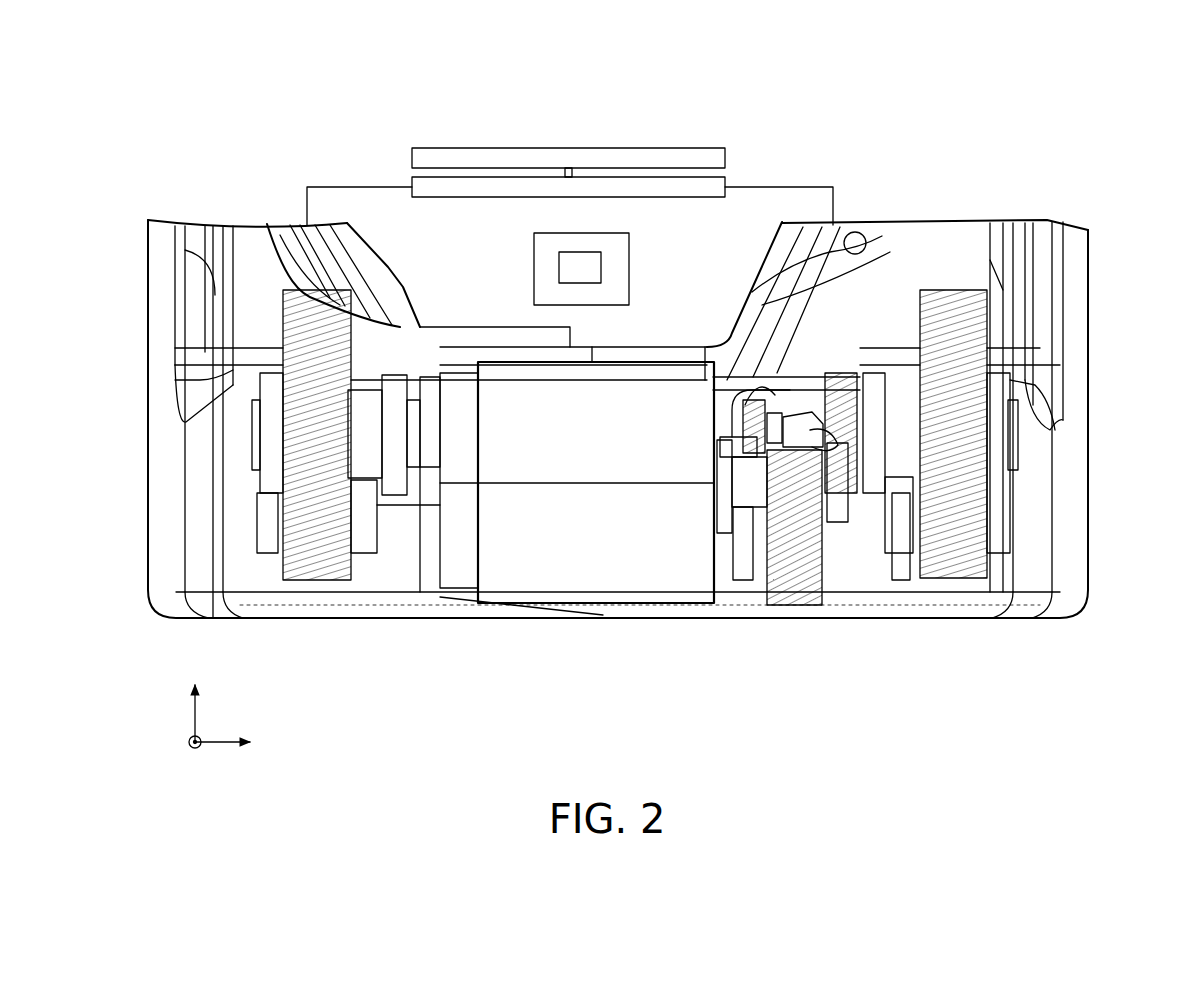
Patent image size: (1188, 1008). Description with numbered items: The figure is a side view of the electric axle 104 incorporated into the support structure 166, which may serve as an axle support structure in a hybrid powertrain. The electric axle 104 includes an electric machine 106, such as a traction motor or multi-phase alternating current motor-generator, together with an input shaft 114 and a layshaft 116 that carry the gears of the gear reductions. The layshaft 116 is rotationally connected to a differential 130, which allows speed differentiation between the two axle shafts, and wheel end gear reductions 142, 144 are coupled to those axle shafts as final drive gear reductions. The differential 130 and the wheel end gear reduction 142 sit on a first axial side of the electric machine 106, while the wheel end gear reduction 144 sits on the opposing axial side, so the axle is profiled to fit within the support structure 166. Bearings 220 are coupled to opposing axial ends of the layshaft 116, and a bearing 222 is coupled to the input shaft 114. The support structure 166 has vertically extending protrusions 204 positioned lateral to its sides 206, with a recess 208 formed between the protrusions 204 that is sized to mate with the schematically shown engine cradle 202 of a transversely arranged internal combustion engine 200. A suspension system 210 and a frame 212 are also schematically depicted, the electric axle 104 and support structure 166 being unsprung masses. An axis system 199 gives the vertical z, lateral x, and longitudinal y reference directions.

The electric axle 104 is at (438, 306).
The electric machine 106 is at (653, 604).
The input shaft 114 is at (750, 493).
The layshaft 116 is at (890, 553).
The differential 130 is at (797, 403).
The wheel end gear reduction 142 is at (904, 321).
The wheel end gear reduction 144 is at (271, 309).
The support structure 166 is at (968, 614).
The axis system 199 is at (236, 708).
The internal combustion engine 200 is at (603, 262).
The engine cradle 202 is at (534, 258).
The vertically extending protrusions 204 is at (345, 233).
The sides 206 is at (147, 260).
The recess 208 is at (474, 248).
The suspension system 210 is at (412, 185).
The frame 212 is at (726, 157).
The bearings 220 is at (902, 572).
The bearing 222 is at (838, 510).